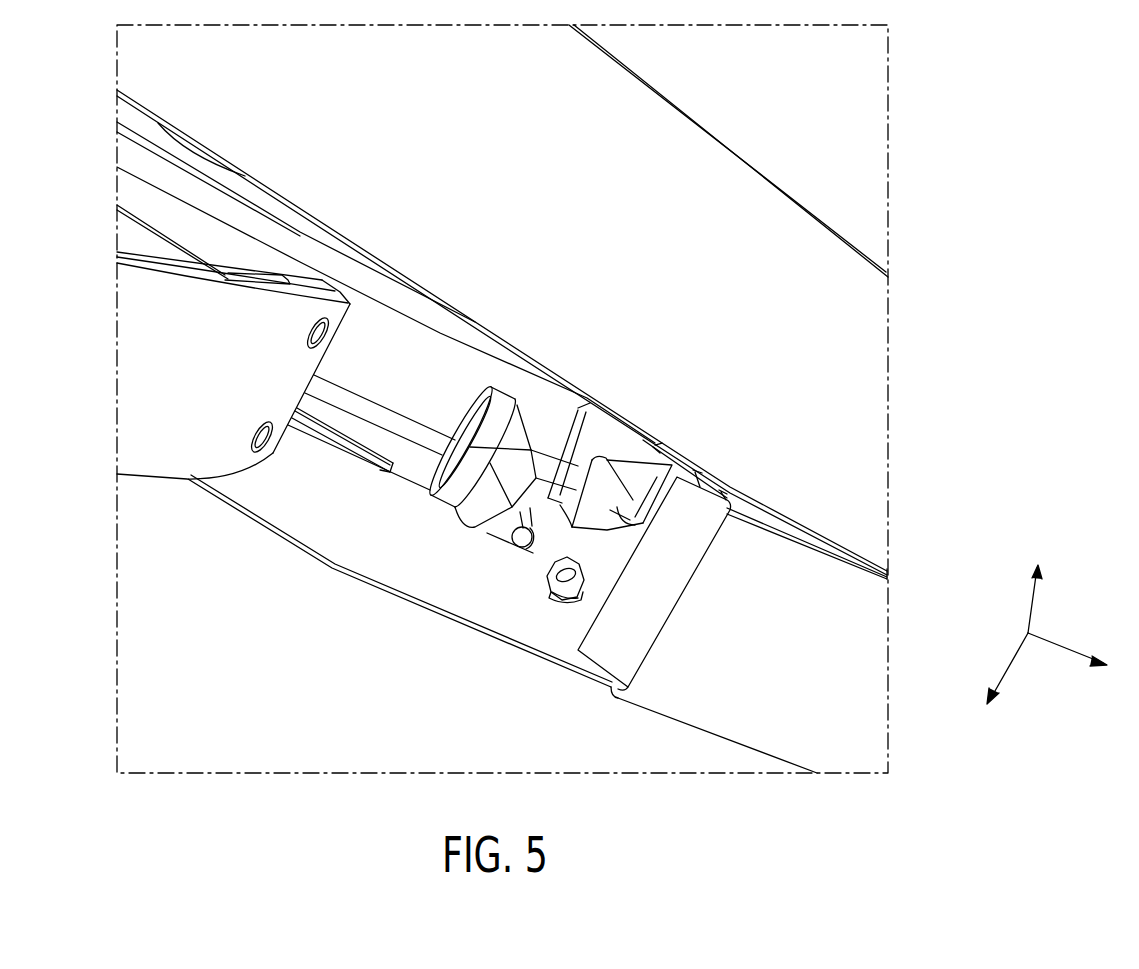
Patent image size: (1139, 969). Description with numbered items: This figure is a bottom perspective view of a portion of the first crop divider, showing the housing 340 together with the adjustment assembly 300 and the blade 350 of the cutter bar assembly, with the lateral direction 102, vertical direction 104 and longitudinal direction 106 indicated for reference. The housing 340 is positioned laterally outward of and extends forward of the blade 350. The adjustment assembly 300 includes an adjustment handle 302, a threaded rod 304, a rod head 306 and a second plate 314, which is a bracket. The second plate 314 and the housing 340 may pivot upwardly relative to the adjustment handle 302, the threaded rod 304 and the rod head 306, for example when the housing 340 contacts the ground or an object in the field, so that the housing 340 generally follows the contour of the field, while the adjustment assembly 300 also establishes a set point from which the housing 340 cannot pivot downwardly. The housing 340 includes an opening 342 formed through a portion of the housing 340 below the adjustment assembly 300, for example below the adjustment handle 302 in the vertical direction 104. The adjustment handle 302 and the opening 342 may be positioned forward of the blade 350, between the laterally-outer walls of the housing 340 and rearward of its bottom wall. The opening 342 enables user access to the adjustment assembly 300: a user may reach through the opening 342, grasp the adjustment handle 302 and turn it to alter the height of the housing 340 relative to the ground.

The adjustment assembly 300 is at (782, 351).
The adjustment handle 302 is at (512, 392).
The threaded rod 304 is at (612, 478).
The rod head 306 is at (620, 552).
The second plate 314 is at (533, 560).
The housing 340 is at (733, 147).
The opening 342 is at (312, 554).
The blade 350 is at (150, 478).
The lateral direction 102 is at (1053, 640).
The vertical direction 104 is at (1032, 605).
The longitudinal direction 106 is at (1014, 657).